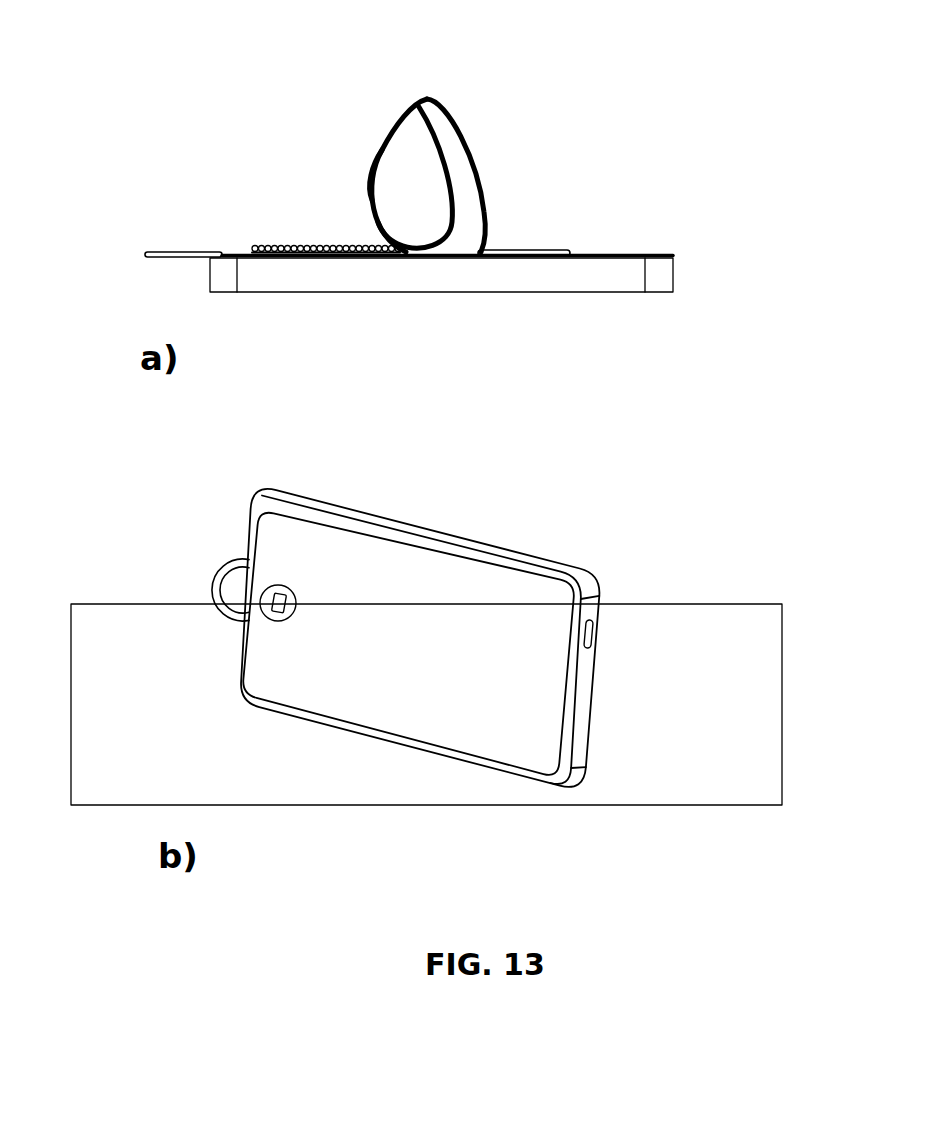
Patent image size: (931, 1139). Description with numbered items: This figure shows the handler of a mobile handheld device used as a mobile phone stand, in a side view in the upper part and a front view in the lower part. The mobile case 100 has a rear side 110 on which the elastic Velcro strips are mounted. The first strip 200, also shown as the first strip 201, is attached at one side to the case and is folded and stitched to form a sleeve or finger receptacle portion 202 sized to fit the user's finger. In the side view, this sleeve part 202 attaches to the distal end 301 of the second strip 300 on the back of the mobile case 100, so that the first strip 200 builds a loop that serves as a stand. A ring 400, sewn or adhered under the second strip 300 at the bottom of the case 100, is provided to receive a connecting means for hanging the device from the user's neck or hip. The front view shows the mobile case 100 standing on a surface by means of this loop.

The mobile case 100 is at (622, 108).
The rear side of the mobile case 110 is at (618, 255).
The first strip 200 is at (365, 125).
The first strip 201 is at (518, 251).
The sleeve or finger receptacle portion 202 is at (365, 200).
The second strip 300 is at (293, 258).
The distal end of the second strip 301 is at (393, 258).
The ring 400 is at (173, 260).